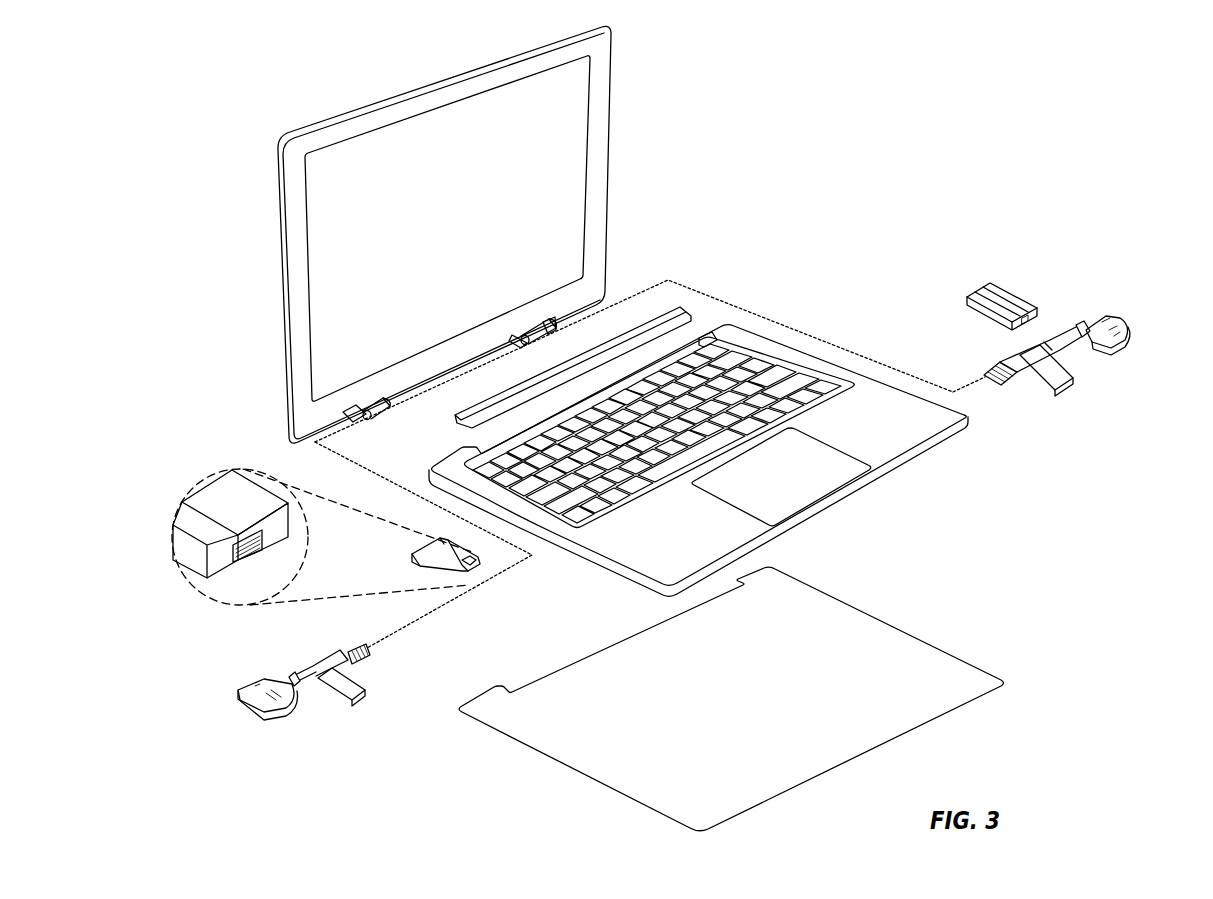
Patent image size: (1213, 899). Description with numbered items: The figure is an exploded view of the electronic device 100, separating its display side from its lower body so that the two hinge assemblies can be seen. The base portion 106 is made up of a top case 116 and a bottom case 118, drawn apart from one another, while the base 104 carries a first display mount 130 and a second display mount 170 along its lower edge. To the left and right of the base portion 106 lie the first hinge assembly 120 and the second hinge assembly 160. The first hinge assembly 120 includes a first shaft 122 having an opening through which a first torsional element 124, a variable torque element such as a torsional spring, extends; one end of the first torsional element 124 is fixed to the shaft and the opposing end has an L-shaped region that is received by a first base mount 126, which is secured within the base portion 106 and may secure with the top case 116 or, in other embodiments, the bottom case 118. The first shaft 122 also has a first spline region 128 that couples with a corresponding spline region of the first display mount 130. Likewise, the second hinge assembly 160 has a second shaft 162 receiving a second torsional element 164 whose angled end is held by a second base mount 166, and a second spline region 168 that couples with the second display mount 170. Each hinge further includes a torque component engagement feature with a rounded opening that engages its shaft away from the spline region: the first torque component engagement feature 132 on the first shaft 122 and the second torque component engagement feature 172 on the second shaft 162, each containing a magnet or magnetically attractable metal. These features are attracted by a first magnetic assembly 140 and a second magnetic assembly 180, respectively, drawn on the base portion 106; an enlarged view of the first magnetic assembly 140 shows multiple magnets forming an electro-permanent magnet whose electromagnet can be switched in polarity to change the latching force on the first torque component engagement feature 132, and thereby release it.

The electronic device 100 is at (243, 128).
The base 104 is at (613, 122).
The base portion 106 is at (965, 530).
The top case 116 is at (883, 487).
The bottom case 118 is at (873, 613).
The first hinge assembly 120 is at (222, 655).
The first shaft 122 is at (308, 670).
The first torsional element 124 is at (291, 676).
The first base mount 126 is at (280, 710).
The first spline region 128 is at (369, 665).
The first display mount 130 is at (369, 418).
The first torque component engagement feature 132 is at (360, 702).
The first magnetic assembly 140 is at (414, 558).
The second hinge assembly 160 is at (1114, 240).
The second shaft 162 is at (1062, 337).
The second torsional element 164 is at (1085, 337).
The second base mount 166 is at (1126, 326).
The second spline region 168 is at (1001, 386).
The second display mount 170 is at (539, 346).
The second torque component engagement feature 172 is at (1069, 387).
The second magnetic assembly 180 is at (975, 304).